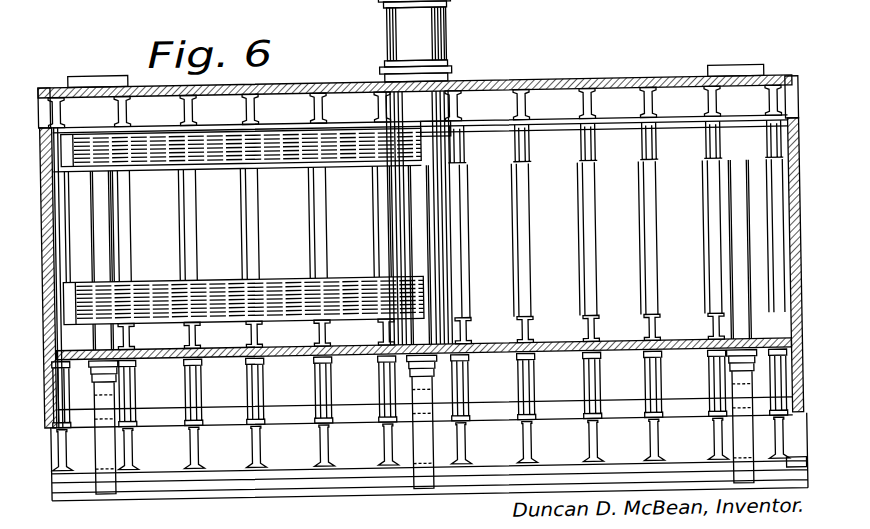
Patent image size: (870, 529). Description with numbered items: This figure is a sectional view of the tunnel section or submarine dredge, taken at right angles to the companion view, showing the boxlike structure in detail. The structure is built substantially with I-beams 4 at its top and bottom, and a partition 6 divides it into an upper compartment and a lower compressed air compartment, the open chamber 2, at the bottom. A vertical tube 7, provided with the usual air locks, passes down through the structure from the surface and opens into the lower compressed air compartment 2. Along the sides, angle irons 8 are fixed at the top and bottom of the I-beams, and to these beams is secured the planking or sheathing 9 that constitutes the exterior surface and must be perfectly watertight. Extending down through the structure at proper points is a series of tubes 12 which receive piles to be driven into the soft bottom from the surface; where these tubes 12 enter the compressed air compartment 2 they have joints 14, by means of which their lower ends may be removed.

The open chamber 2 is at (423, 271).
The I-beams 4 is at (521, 454).
The partition 6 is at (545, 351).
The tube 7 is at (446, 47).
The angle irons 8 is at (580, 151).
The planking or sheathing 9 is at (556, 87).
The tubes 12 is at (96, 264).
The joints 14 is at (80, 373).